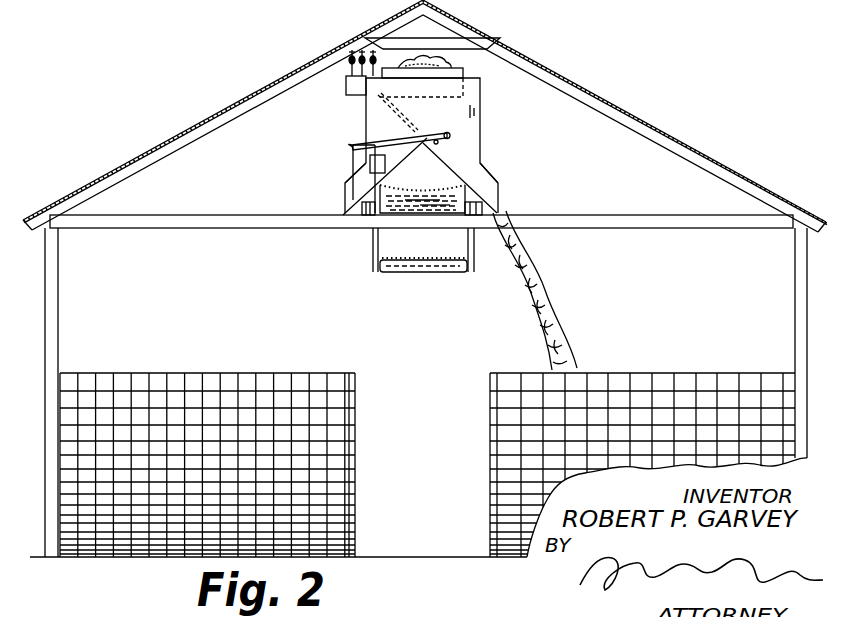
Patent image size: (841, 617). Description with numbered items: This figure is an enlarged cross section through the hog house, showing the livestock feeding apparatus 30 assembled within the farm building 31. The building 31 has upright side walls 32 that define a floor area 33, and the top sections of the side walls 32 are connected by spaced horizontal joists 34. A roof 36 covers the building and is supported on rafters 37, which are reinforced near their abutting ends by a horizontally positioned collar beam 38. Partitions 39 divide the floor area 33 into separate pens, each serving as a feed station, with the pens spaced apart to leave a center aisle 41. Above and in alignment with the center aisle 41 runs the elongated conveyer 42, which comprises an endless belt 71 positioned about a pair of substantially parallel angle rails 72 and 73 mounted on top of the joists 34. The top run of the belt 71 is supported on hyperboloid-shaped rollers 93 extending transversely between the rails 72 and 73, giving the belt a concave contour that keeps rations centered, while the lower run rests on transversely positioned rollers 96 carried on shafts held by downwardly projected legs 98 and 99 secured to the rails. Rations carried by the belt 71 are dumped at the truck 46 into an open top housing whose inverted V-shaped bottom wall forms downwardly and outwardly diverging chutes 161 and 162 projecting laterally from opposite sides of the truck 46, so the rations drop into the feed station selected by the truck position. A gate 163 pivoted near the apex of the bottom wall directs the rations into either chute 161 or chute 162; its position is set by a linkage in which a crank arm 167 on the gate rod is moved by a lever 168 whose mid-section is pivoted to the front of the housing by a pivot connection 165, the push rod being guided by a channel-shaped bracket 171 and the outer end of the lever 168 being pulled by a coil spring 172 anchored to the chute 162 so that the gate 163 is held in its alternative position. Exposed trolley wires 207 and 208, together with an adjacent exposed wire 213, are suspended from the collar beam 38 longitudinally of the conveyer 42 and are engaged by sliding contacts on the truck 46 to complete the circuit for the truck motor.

The livestock feeding apparatus 30 is at (322, 182).
The farm building 31 is at (631, 87).
The side walls 32 is at (58, 285).
The floor area 33 is at (393, 557).
The horizontal joists 34 is at (678, 229).
The roof 36 is at (549, 67).
The rafters 37 is at (613, 118).
The collar beams 38 is at (487, 48).
The partitions 39 is at (280, 372).
The center aisle 41 is at (435, 446).
The conveyer 42 is at (459, 199).
The truck 46 is at (483, 121).
The endless belt 71 is at (412, 196).
The angle rail 72 is at (367, 217).
The angle rail 73 is at (482, 217).
The hyperboloid-shaped rollers 93 is at (435, 208).
The rollers 96 is at (410, 271).
The leg 98 is at (373, 248).
The leg 99 is at (475, 253).
The chute 161 is at (497, 188).
The chute 162 is at (346, 203).
The gate 163 is at (407, 120).
The pivot connection 165 is at (401, 131).
The crank arm 167 is at (450, 141).
The lever 168 is at (360, 143).
The channel-shaped bracket 171 is at (355, 148).
The coil spring 172 is at (368, 163).
The trolley wire 207 is at (348, 63).
The trolley wire 208 is at (357, 52).
The exposed wire 213 is at (380, 52).